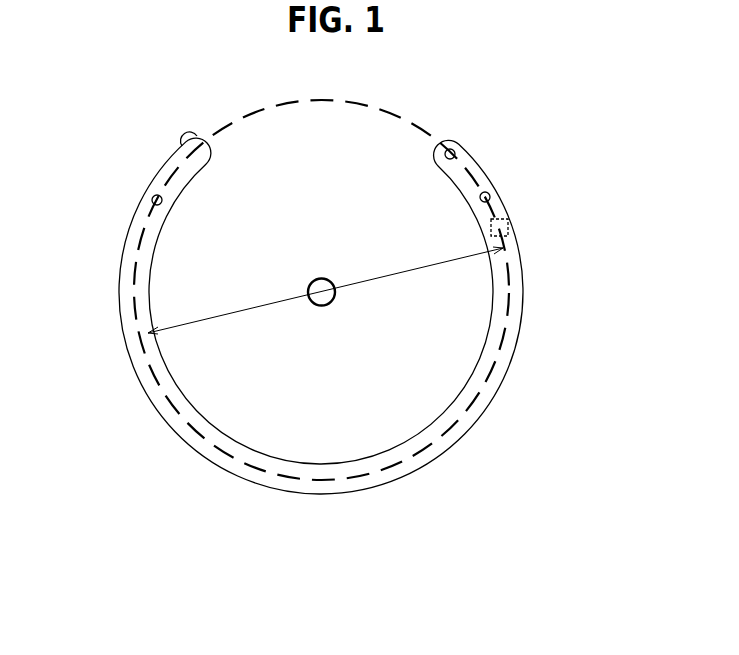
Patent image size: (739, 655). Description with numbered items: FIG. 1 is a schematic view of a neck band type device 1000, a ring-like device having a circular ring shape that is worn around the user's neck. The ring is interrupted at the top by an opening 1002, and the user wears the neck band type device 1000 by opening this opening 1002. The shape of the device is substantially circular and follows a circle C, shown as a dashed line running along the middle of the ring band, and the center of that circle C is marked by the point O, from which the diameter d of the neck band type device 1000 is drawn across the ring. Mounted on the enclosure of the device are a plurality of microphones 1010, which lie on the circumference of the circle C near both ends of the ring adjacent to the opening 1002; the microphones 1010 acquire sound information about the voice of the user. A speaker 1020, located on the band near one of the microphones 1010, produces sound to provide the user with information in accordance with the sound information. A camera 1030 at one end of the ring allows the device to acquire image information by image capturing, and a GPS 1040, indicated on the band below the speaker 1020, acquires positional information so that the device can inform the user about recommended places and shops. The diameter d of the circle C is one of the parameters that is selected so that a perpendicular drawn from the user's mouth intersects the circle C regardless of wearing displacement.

The neck band type device 1000 is at (362, 495).
The opening 1002 is at (208, 149).
The microphone 1010 is at (152, 199).
The speaker 1020 is at (491, 197).
The camera 1030 is at (190, 132).
The GPS 1040 is at (509, 226).
The center of ring O is at (335, 299).
The circle C is at (433, 446).
The diameter d is at (325, 290).